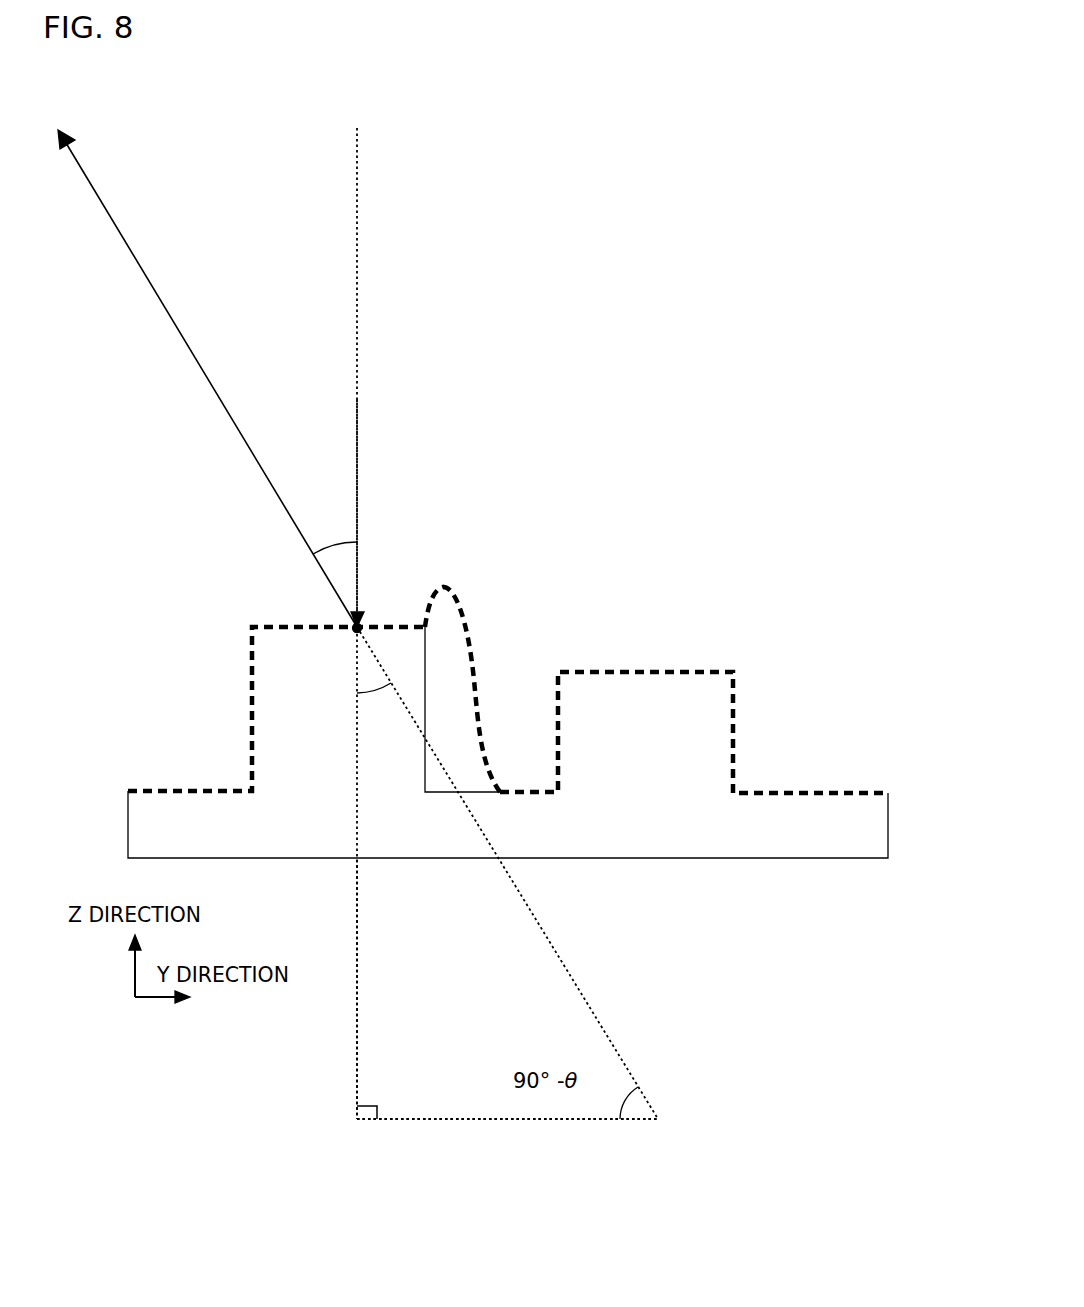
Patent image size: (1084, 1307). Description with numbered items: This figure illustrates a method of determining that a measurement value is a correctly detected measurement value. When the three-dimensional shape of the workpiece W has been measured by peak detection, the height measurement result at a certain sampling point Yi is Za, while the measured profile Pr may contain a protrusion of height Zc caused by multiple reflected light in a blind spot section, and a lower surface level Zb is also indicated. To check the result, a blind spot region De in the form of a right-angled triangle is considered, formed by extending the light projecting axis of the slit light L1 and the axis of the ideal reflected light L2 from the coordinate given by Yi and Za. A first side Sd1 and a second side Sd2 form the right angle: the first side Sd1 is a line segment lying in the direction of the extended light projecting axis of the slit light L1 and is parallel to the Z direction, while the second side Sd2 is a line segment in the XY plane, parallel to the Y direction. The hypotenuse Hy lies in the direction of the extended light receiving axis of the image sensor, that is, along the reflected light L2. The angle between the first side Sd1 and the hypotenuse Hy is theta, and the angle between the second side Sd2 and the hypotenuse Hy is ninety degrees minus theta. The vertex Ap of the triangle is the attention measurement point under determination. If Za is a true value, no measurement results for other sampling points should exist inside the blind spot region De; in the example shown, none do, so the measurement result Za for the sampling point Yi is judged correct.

The workpiece W is at (692, 858).
The measurement result of the height Za is at (238, 627).
The lower surface height position Zb is at (897, 793).
The height of the protrusion Zc is at (457, 583).
The profile Pr is at (478, 697).
The sampling point Yi is at (351, 604).
The slit light L1 is at (358, 433).
The ideal reflected light L2 is at (238, 418).
The vertex Ap is at (363, 615).
The hypotenuse Hy is at (560, 958).
The first side Sd1 is at (357, 1012).
The second side Sd2 is at (540, 1120).
The blind spot region De is at (438, 1100).